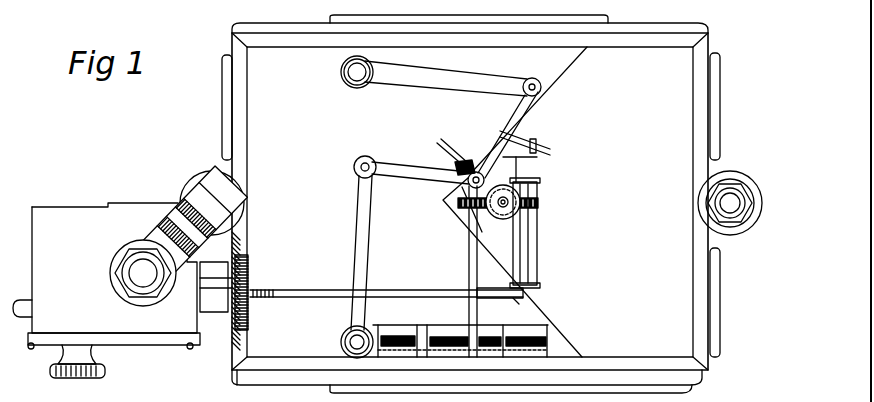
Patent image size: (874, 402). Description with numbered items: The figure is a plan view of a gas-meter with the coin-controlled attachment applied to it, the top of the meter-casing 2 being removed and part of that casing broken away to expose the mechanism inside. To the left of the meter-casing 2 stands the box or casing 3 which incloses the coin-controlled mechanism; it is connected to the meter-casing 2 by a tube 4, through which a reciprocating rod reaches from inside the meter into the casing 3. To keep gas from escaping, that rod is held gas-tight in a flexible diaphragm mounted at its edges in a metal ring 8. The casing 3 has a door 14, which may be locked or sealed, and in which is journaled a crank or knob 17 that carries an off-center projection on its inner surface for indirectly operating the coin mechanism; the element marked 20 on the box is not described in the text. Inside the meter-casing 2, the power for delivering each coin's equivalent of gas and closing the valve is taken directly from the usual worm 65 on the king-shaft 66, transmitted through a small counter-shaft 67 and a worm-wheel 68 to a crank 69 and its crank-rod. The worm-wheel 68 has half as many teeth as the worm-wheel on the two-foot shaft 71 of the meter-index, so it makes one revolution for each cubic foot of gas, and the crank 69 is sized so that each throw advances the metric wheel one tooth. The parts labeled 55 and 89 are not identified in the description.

The meter-casing 2 is at (492, 200).
The box or casing 3 is at (130, 249).
The tube 4 is at (198, 298).
The metal ring 8 is at (243, 282).
The door 14 is at (142, 345).
The crank or knob 17 is at (77, 373).
The lamp house cover 20 is at (105, 200).
The rod 55 is at (320, 276).
The worm 65 is at (521, 193).
The king-shaft 66 is at (503, 214).
The counter-shaft 67 is at (532, 235).
The worm-wheel 68 is at (540, 205).
The crank 69 is at (503, 304).
The two-foot shaft 71 is at (469, 265).
The arm 89 is at (356, 264).